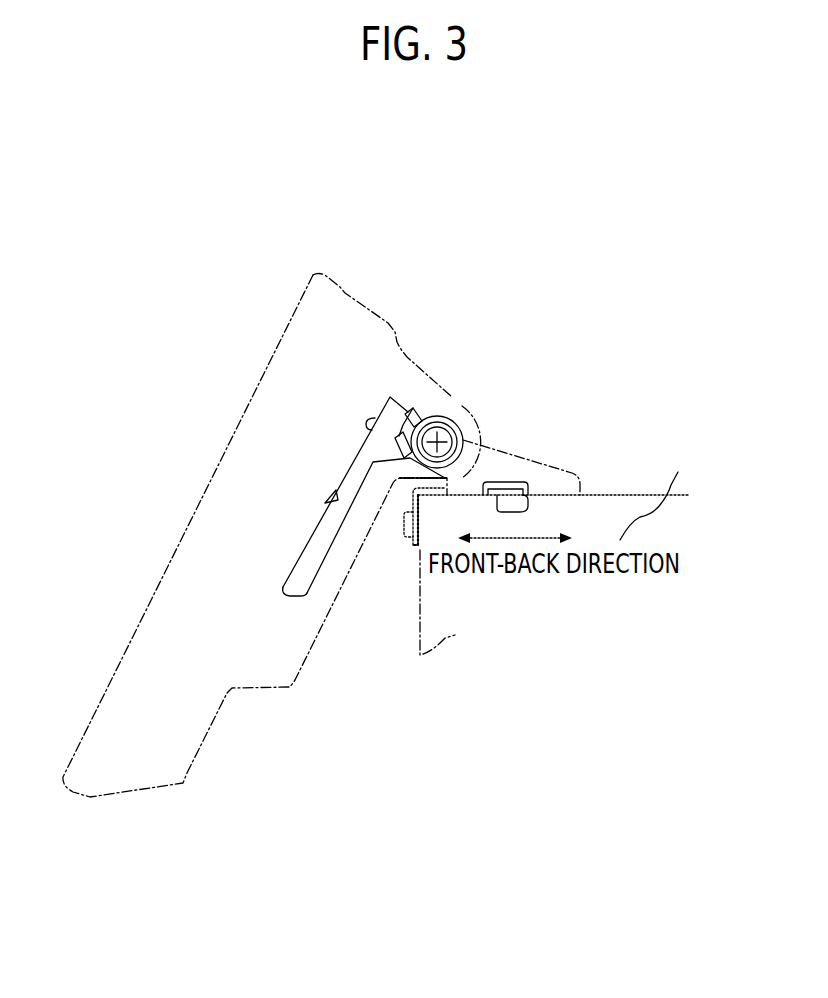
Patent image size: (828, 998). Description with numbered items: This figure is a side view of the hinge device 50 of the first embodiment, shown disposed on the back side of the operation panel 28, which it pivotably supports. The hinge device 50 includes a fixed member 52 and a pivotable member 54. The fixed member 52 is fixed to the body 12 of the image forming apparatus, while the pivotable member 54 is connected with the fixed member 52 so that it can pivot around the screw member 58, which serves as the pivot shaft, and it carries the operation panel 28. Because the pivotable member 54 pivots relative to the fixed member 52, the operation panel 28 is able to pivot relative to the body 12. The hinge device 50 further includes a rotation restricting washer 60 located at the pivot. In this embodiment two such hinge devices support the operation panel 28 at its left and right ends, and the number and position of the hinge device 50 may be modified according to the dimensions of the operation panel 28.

The body 12 is at (595, 517).
The operation panel 28 is at (172, 740).
The hinge device 50 is at (472, 404).
The fixed member 52 is at (530, 466).
The pivotable member 54 is at (298, 578).
The screw member 58 is at (443, 433).
The rotation restricting washer 60 is at (424, 405).